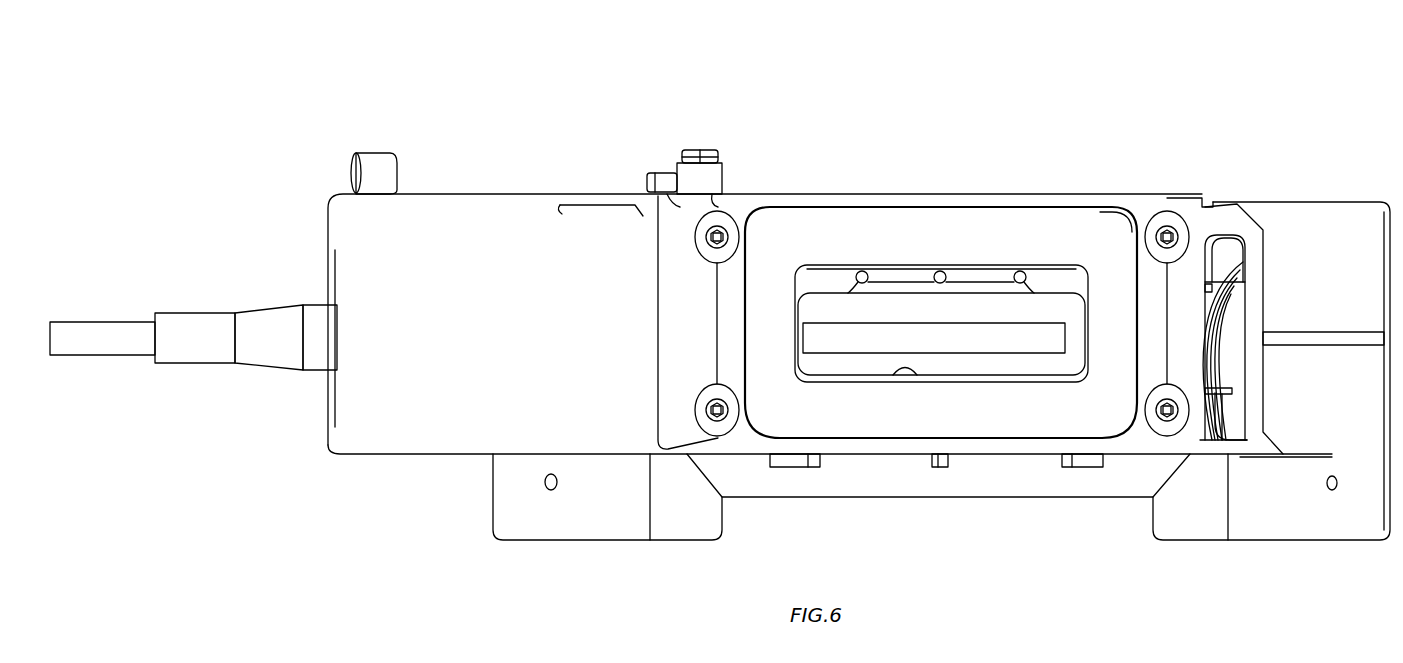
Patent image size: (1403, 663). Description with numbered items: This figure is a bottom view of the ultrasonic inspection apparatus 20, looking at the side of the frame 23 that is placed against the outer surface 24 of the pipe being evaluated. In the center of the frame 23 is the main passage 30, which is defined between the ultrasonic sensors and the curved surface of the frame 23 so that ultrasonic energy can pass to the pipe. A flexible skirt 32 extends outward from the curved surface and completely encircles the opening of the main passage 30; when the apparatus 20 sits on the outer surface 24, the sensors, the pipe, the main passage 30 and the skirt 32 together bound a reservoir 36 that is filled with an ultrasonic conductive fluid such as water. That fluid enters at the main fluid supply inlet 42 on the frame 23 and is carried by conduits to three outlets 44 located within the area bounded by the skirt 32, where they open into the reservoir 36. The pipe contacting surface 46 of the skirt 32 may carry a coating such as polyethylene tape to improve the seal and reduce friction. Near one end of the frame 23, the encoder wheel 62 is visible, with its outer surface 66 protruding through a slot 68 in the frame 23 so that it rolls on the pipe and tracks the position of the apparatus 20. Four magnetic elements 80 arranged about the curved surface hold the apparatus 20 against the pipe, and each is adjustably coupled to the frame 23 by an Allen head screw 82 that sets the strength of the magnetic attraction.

The apparatus 20 is at (1074, 103).
The frame 23 is at (1287, 212).
The outer surface 24 is at (822, 338).
The main passage 30 is at (893, 376).
The skirt 32 is at (918, 207).
The reservoir 36 is at (890, 262).
The main fluid supply inlet 42 is at (655, 178).
The outlets 44 is at (862, 271).
The pipe contacting surface 46 is at (990, 195).
The encoder wheel 62 is at (1238, 335).
The outer surface 66 is at (1245, 440).
The slot 68 is at (1222, 442).
The magnetic elements 80 is at (703, 236).
The Allen head screw 82 is at (738, 241).